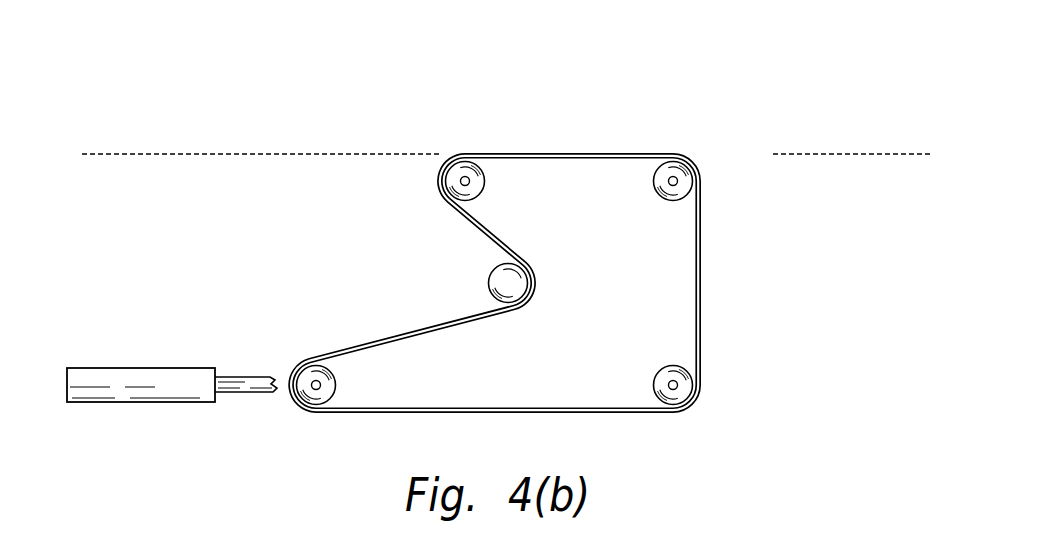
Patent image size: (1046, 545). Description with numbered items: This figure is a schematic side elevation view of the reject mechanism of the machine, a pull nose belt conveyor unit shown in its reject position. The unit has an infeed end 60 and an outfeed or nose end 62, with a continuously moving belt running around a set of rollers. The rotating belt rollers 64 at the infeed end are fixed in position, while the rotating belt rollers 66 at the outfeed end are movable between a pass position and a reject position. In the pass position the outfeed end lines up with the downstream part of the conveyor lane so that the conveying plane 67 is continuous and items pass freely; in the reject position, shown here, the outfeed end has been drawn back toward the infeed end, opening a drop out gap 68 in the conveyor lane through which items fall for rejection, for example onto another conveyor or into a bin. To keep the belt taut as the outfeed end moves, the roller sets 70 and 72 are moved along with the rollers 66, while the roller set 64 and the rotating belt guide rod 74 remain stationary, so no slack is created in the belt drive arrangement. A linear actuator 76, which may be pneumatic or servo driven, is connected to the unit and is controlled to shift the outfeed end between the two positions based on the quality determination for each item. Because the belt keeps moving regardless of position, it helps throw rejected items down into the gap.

The infeed end 60 is at (440, 135).
The outfeed or nose end 62 is at (670, 135).
The rotating belt rollers 64 is at (480, 183).
The rotating belt rollers 66 is at (673, 200).
The conveying plane 67 is at (203, 153).
The drop out gap 68 is at (733, 151).
The roller set 70 is at (333, 385).
The roller set 72 is at (660, 377).
The rotating belt guide rod 74 is at (493, 282).
The linear actuator 76 is at (155, 372).